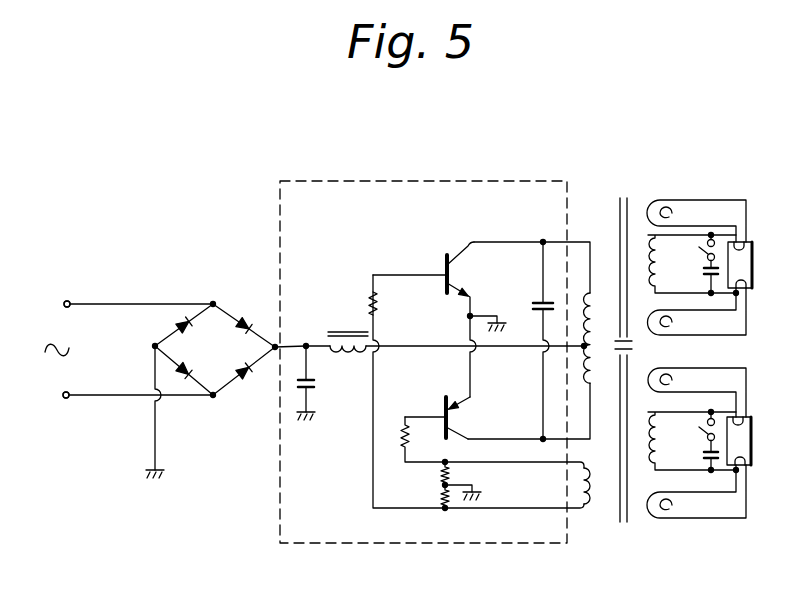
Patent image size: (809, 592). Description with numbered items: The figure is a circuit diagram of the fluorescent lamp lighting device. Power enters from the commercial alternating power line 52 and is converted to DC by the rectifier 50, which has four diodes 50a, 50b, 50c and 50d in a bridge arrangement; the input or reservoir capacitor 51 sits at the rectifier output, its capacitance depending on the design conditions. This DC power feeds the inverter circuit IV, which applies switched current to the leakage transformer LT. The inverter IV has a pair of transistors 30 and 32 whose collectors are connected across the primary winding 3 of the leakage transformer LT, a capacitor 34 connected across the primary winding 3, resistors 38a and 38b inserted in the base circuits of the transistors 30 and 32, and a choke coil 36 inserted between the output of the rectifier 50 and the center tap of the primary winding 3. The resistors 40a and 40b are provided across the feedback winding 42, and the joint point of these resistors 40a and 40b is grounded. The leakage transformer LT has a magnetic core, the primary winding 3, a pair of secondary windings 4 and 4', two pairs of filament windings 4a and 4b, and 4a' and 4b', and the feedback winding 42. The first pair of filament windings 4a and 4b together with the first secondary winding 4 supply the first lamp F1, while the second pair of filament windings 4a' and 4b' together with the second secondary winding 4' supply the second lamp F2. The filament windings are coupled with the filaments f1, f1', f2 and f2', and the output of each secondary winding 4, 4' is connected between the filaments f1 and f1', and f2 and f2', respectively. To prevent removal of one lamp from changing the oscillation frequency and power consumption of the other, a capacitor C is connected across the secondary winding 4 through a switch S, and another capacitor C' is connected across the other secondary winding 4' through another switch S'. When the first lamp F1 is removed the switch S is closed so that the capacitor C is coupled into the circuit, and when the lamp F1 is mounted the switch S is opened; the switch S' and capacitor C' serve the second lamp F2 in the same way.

The commercial alternating power line 52 is at (67, 300).
The rectifier 50 is at (213, 302).
The diode 50a is at (183, 318).
The diode 50b is at (252, 300).
The diode 50c is at (245, 387).
The diode 50d is at (177, 378).
The input or reservoir capacitor 51 is at (312, 383).
The choke coil 36 is at (338, 328).
The transistor 30 is at (443, 268).
The transistor 32 is at (442, 408).
The capacitor 34 is at (538, 297).
The resistor 38a is at (380, 313).
The resistor 38b is at (403, 447).
The resistor 40a is at (452, 477).
The resistor 40b is at (448, 508).
The feedback winding 42 is at (580, 500).
The inverter circuit IV is at (488, 178).
The leakage transformer LT is at (625, 185).
The primary winding 3 is at (593, 292).
The secondary winding 4 is at (689, 226).
The filament winding 4a is at (696, 197).
The filament winding 4b is at (697, 328).
The secondary winding 4' is at (684, 498).
The filament winding 4a' is at (721, 375).
The filament winding 4b' is at (696, 511).
The first lamp F1 is at (752, 252).
The filament f1 is at (762, 221).
The filament f1' is at (772, 287).
The second lamp F2 is at (750, 437).
The filament f2 is at (765, 400).
The filament f2' is at (771, 472).
The switch S is at (696, 250).
The capacitor C is at (697, 280).
The switch S' is at (691, 432).
The capacitor C' is at (692, 459).